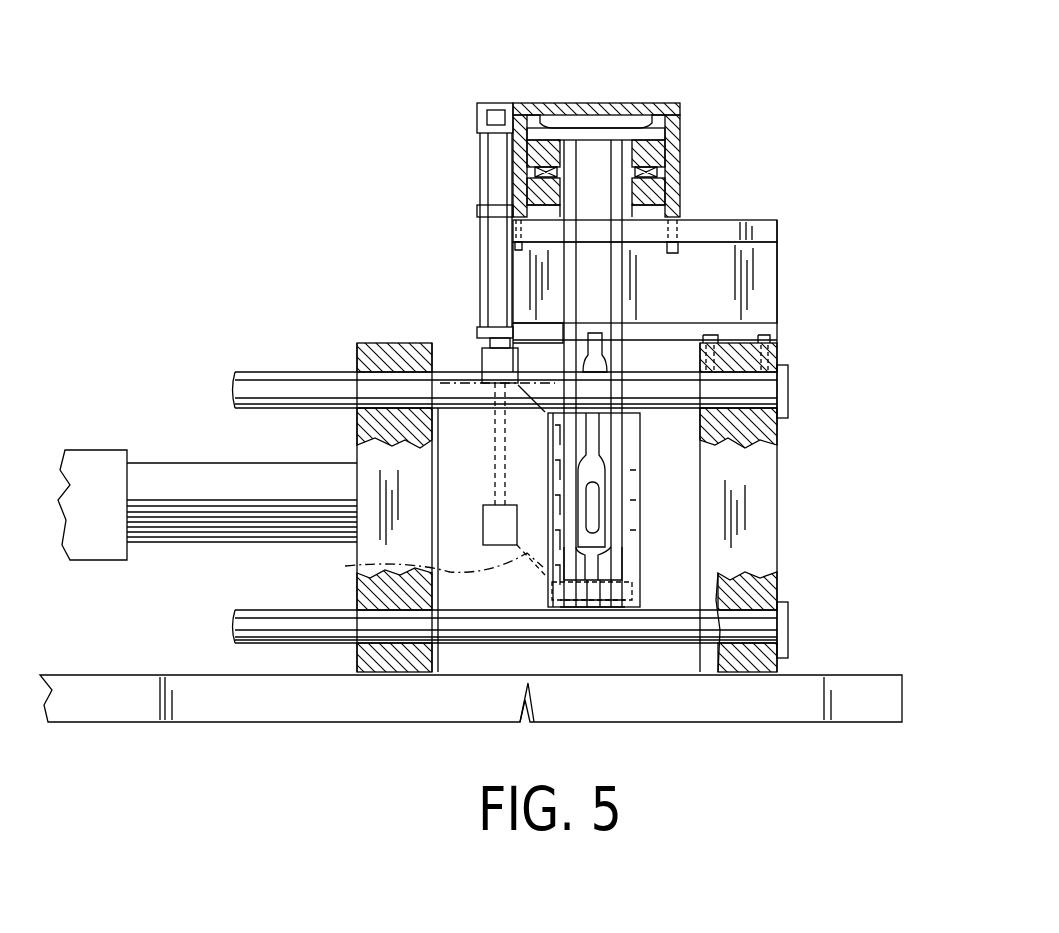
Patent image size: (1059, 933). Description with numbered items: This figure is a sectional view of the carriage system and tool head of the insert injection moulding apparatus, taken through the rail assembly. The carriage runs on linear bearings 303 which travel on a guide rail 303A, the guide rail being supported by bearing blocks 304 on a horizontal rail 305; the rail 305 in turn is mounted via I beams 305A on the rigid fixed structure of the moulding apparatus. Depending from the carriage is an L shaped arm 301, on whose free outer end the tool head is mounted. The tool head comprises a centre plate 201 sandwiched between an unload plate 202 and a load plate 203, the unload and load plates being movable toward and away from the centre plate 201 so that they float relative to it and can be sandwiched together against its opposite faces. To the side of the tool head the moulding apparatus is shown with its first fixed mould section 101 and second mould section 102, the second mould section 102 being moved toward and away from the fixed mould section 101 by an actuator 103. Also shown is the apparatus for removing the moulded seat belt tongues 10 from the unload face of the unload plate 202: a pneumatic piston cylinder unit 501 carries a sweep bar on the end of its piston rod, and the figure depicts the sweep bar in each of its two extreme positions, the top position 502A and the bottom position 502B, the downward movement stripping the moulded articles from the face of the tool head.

The seat belt tongue 10 is at (526, 439).
The first fixed mould section 101 is at (780, 446).
The second mould section 102 is at (353, 490).
The actuator 103 is at (100, 462).
The centre plate 201 is at (590, 607).
The unload plate 202 is at (563, 573).
The load plate 203 is at (623, 568).
The L shaped arm 301 is at (625, 290).
The linear bearings 303 is at (662, 152).
The guide rail 303A is at (668, 172).
The bearing blocks 304 is at (670, 192).
The horizontal rail 305 is at (662, 105).
The I beams 305A is at (780, 233).
The pneumatic piston cylinder unit 501 is at (498, 270).
The sweep bar top extreme position 502A is at (510, 412).
The sweep bar bottom extreme position 502B is at (358, 567).